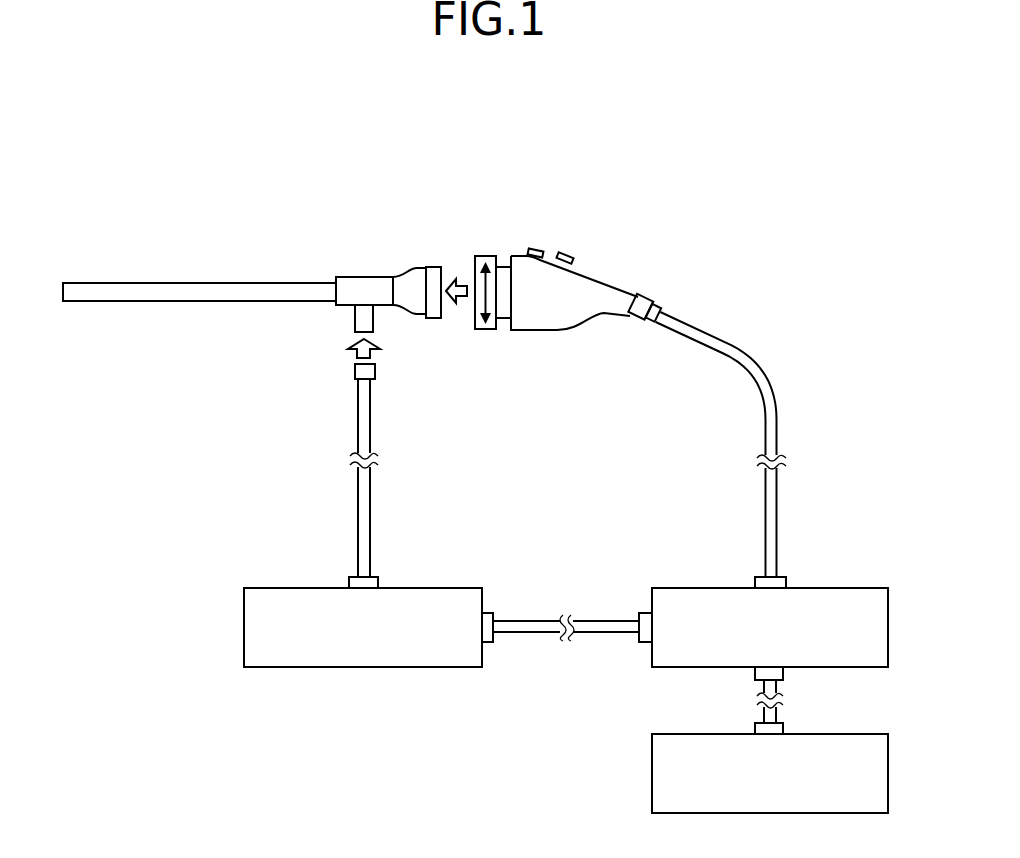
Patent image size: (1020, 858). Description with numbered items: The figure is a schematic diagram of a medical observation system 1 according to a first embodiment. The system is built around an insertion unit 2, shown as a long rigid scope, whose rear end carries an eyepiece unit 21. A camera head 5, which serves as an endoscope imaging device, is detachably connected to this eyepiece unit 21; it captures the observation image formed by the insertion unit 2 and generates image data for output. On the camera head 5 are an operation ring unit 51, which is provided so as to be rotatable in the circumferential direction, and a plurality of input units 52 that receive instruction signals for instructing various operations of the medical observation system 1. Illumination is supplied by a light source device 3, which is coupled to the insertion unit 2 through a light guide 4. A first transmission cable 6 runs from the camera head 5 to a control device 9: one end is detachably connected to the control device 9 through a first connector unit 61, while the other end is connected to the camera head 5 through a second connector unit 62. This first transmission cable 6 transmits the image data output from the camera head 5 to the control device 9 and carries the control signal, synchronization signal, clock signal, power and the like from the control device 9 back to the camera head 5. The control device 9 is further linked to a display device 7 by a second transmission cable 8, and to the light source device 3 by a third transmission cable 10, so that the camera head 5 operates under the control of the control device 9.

The medical observation system 1 is at (733, 188).
The insertion unit 2 is at (304, 283).
The eyepiece unit 21 is at (432, 267).
The light source device 3 is at (448, 588).
The light guide 4 is at (358, 528).
The camera head 5 is at (520, 283).
The operation ring unit 51 is at (485, 255).
The input units 52 is at (536, 250).
The first transmission cable 6 is at (687, 320).
The first connector unit 61 is at (782, 575).
The second connector unit 62 is at (645, 322).
The display device 7 is at (855, 734).
The second transmission cable 8 is at (762, 688).
The control device 9 is at (855, 588).
The third transmission cable 10 is at (535, 621).